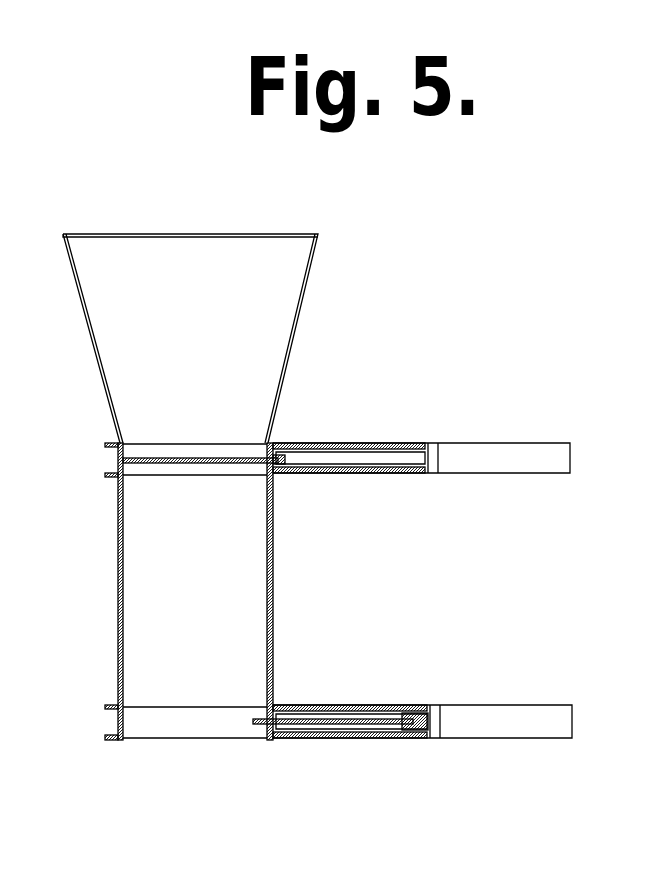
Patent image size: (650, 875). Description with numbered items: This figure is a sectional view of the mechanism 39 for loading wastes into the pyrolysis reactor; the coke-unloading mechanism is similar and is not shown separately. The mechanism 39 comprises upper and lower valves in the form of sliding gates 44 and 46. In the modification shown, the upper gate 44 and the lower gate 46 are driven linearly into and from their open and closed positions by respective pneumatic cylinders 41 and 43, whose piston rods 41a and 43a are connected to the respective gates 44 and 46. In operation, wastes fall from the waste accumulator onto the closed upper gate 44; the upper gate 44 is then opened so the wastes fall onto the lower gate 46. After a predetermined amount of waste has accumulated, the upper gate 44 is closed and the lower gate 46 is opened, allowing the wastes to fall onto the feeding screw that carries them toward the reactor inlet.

The mechanism for loading of the wastes 39 is at (253, 258).
The upper gate 44 is at (175, 460).
The pneumatic cylinder 41 is at (421, 411).
The piston rod 41a is at (316, 453).
The pneumatic cylinder 43 is at (412, 714).
The piston rod 43a is at (333, 722).
The lower gate 46 is at (422, 731).